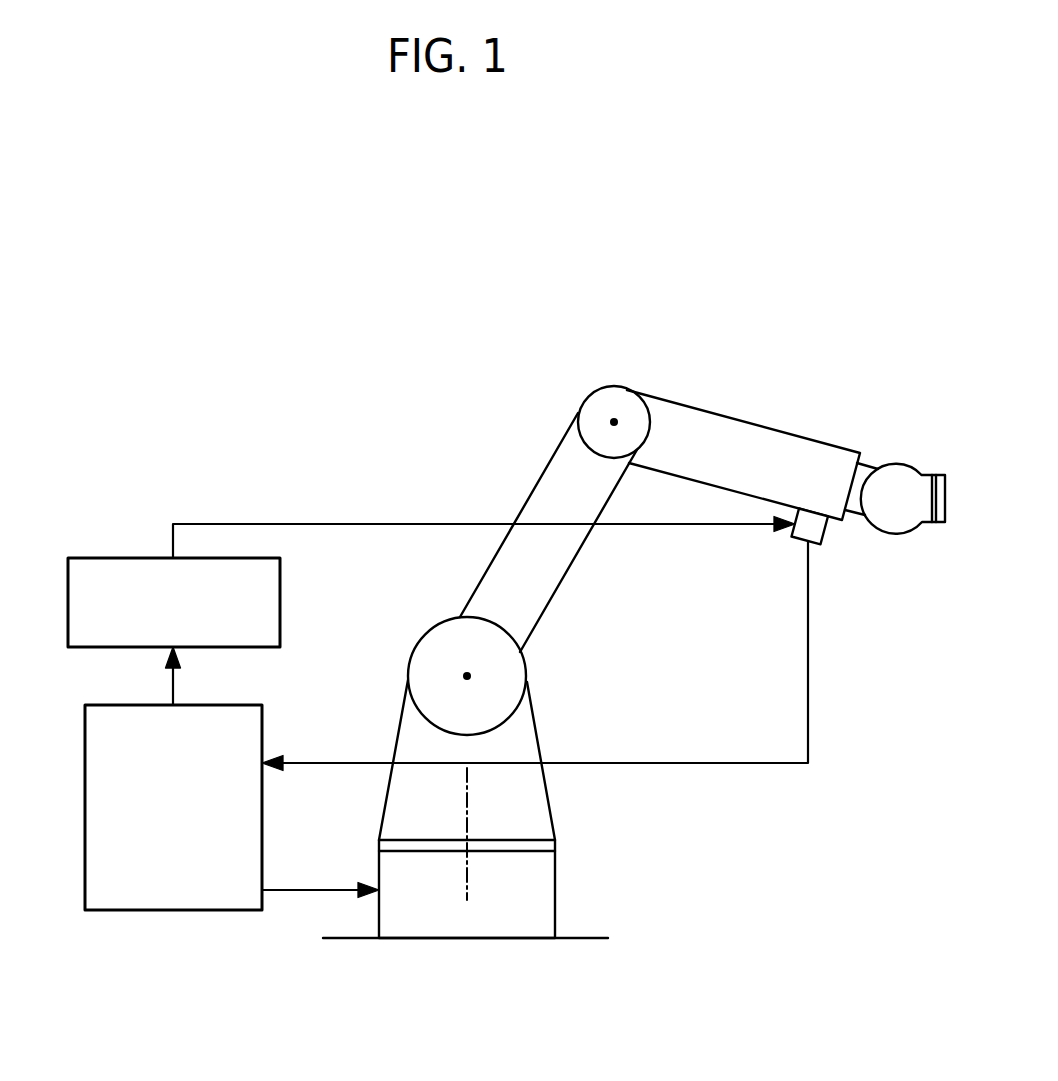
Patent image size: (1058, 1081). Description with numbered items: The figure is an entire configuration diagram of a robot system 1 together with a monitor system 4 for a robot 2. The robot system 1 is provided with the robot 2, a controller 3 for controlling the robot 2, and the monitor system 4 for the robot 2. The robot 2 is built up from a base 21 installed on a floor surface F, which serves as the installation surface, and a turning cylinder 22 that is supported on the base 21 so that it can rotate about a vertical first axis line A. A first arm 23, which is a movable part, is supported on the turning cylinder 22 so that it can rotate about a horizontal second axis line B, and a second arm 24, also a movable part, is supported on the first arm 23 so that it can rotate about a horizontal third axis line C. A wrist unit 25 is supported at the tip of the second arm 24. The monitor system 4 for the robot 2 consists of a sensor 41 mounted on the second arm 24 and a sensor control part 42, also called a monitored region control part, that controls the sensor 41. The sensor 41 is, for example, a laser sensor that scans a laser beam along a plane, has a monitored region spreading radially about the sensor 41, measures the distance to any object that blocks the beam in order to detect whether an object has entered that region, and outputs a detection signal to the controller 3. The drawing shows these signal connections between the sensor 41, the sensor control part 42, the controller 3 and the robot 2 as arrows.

The robot system 1 is at (192, 252).
The robot 2 is at (506, 440).
The controller 3 is at (170, 912).
The monitor system 4 is at (83, 512).
The base 21 is at (508, 923).
The turning cylinder 22 is at (530, 812).
The first arm 23 is at (555, 563).
The second arm 24 is at (735, 440).
The wrist unit 25 is at (941, 446).
The sensor 41 is at (830, 535).
The sensor control part 42 is at (282, 598).
The first axis line A is at (467, 883).
The second axis line B is at (467, 676).
The third axis line C is at (614, 422).
The floor surface F is at (582, 938).